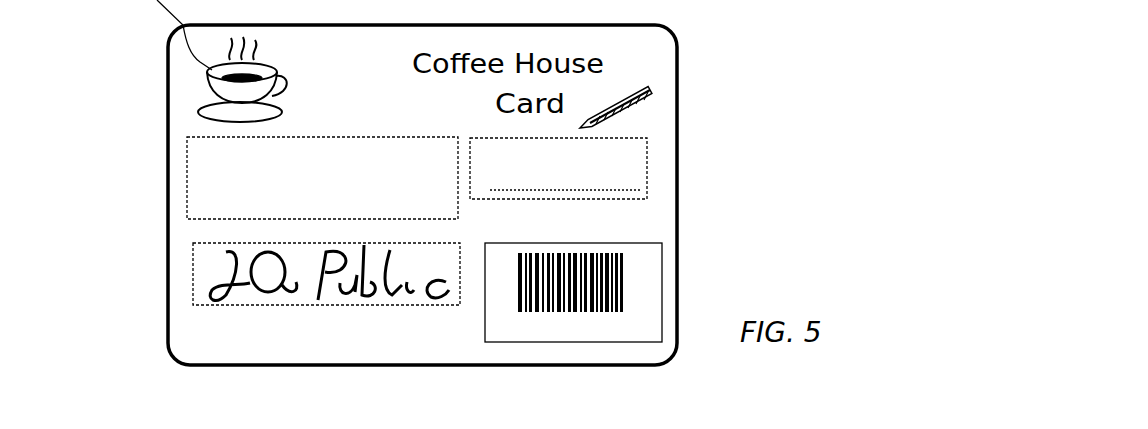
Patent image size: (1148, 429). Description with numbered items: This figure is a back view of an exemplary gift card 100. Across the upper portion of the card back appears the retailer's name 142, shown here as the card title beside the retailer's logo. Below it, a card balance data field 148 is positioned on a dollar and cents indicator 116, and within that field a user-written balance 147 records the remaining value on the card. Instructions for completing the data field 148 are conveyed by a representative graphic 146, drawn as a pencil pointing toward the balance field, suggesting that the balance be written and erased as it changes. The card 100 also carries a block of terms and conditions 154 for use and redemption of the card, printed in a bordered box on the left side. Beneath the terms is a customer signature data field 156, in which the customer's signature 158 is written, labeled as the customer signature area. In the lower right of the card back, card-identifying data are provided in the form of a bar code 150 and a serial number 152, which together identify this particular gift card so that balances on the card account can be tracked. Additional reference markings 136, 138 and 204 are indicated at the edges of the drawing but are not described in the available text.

The gift card 100 is at (165, 83).
The dollar and cents indicator 116 is at (647, 178).
The card front component 136 is at (636, 8).
The card front component 138 is at (568, 8).
The retailer's name 142 is at (640, 73).
The representative graphic 146 is at (650, 90).
The user-written balance 147 is at (645, 138).
The card balance data field 148 is at (647, 157).
The bar code 150 is at (625, 260).
The serial number 152 is at (625, 338).
The terms and conditions 154 is at (187, 158).
The customer signature data field 156 is at (193, 247).
The customer's signature 158 is at (210, 288).
The reader 204 is at (238, 428).